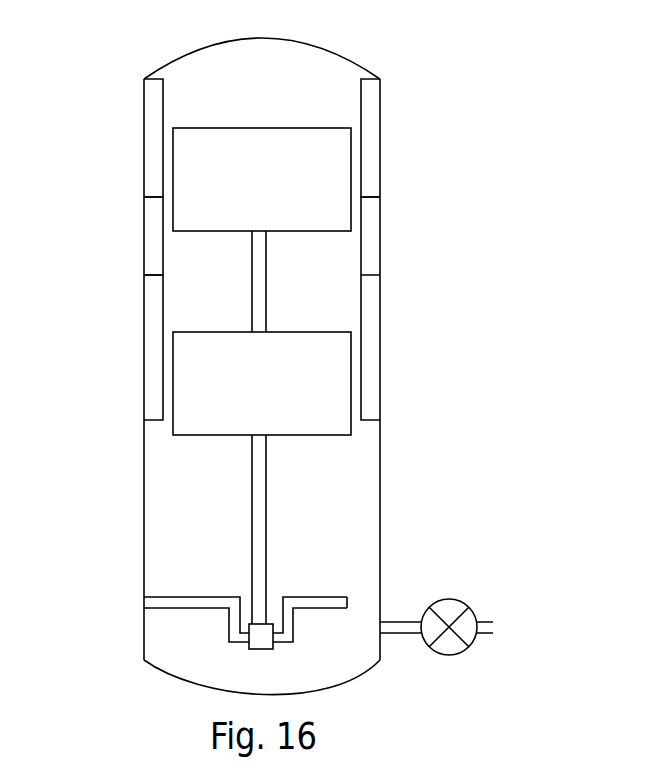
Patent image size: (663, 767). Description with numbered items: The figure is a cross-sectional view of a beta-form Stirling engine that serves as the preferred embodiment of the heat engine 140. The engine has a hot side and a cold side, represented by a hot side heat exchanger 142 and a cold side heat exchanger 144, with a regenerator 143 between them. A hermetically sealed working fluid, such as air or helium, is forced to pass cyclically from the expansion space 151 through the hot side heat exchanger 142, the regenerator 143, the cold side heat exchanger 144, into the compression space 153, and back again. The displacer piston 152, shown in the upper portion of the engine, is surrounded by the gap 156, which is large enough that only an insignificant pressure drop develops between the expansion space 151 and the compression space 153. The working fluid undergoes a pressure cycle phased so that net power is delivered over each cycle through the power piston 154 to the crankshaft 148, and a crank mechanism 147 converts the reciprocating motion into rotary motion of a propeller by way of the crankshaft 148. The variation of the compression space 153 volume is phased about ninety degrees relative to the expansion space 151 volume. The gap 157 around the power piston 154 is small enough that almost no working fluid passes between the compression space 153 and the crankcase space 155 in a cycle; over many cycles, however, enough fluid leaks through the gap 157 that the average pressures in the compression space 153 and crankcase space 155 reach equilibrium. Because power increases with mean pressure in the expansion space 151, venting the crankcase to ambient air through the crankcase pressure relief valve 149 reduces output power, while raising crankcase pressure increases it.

The heat engine 140 is at (433, 542).
The hot side heat exchanger 142 is at (153, 139).
The regenerator 143 is at (153, 265).
The cold side heat exchanger 144 is at (148, 387).
The crank mechanism 147 is at (303, 553).
The crankshaft 148 is at (183, 592).
The crankcase pressure relief valve 149 is at (472, 668).
The expansion space 151 is at (305, 77).
The upper substrate holder 152 is at (297, 147).
The compression space 153 is at (315, 262).
The power piston 154 is at (310, 403).
The crankcase space 155 is at (337, 470).
The gap around the displacer piston 156 is at (357, 177).
The gap around the power piston 157 is at (357, 360).